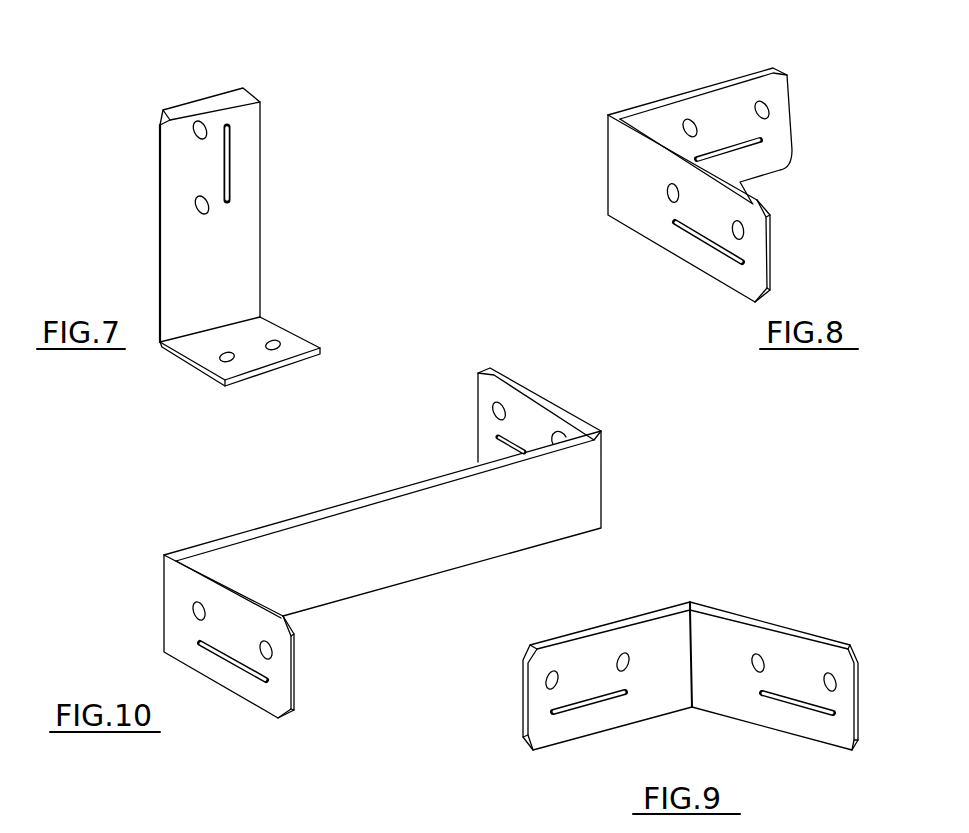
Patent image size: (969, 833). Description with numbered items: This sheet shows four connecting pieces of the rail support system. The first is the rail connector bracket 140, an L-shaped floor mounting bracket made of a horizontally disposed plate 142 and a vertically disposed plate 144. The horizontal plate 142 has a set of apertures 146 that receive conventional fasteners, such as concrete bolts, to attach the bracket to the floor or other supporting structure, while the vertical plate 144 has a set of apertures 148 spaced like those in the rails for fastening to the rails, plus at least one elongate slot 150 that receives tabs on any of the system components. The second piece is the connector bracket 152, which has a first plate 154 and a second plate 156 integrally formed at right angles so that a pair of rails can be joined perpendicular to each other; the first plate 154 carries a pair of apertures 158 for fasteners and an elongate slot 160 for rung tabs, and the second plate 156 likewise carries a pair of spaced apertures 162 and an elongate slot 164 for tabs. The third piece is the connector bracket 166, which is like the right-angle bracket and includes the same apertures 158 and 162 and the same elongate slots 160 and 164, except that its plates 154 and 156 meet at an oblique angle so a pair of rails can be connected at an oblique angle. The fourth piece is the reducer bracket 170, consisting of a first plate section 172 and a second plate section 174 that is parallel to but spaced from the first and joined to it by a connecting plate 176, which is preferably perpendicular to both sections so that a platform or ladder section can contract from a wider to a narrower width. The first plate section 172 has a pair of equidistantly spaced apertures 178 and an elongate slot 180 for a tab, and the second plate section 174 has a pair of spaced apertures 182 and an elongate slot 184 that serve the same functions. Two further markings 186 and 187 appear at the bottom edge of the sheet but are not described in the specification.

In FIG. 7, the rail connector bracket 140 is at (147, 153).
In FIG. 7, the horizontally disposed plate 142 is at (263, 327).
In FIG. 7, the vertically disposed plate 144 is at (177, 223).
In FIG. 7, the apertures 146 is at (283, 348).
In FIG. 7, the apertures 148 is at (197, 132).
In FIG. 7, the elongate slot 150 is at (228, 155).
In FIG. 8, the connector bracket 152 is at (657, 83).
In FIG. 8, the first plate 154 is at (642, 220).
In FIG. 9, the first plate 154 is at (670, 625).
In FIG. 8, the second plate 156 is at (747, 75).
In FIG. 9, the second plate 156 is at (715, 625).
In FIG. 8, the apertures 158 is at (667, 192).
In FIG. 9, the apertures 158 is at (547, 682).
In FIG. 8, the elongate slot 160 is at (713, 245).
In FIG. 9, the elongate slot 160 is at (597, 700).
In FIG. 8, the apertures 162 is at (690, 122).
In FIG. 9, the apertures 162 is at (752, 670).
In FIG. 8, the elongate slot 164 is at (753, 145).
In FIG. 9, the elongate slot 164 is at (793, 703).
In FIG. 9, the connector bracket 166 is at (770, 610).
In FIG. 10, the reducer bracket 170 is at (228, 510).
In FIG. 10, the first plate section 172 is at (175, 631).
In FIG. 10, the second plate section 174 is at (528, 404).
In FIG. 10, the connecting plate 176 is at (410, 568).
In FIG. 10, the apertures 178 is at (192, 604).
In FIG. 10, the elongate slot 180 is at (228, 661).
In FIG. 10, the apertures 182 is at (488, 405).
In FIG. 10, the elongate slot 184 is at (500, 440).
In FIG. 10, the element (partially shown) 186 is at (108, 821).
In FIG. 10, the element (partially shown) 187 is at (282, 821).